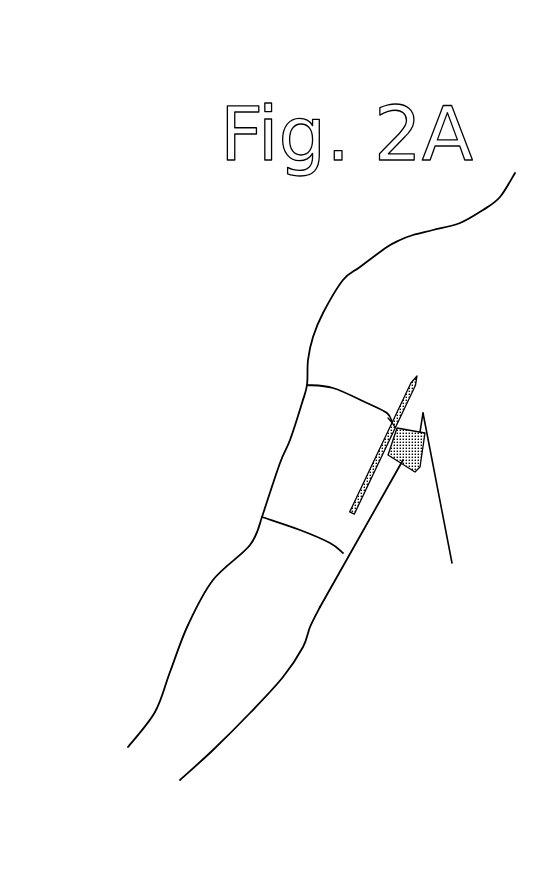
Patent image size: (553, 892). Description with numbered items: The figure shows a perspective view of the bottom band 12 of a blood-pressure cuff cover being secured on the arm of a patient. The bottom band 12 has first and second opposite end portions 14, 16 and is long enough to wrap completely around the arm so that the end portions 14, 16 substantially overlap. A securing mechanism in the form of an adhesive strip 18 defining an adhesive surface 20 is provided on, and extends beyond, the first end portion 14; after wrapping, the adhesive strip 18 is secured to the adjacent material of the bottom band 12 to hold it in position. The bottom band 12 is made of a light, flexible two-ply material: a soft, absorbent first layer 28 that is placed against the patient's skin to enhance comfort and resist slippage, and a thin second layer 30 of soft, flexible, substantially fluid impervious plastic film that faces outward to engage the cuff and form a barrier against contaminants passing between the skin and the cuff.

The bottom band 12 is at (297, 421).
The first end portion 14 is at (415, 393).
The second end portion 16 is at (352, 513).
The adhesive strip 18 is at (420, 470).
The adhesive surface 20 is at (420, 444).
The first layer 28 is at (392, 425).
The second layer 30 is at (283, 471).